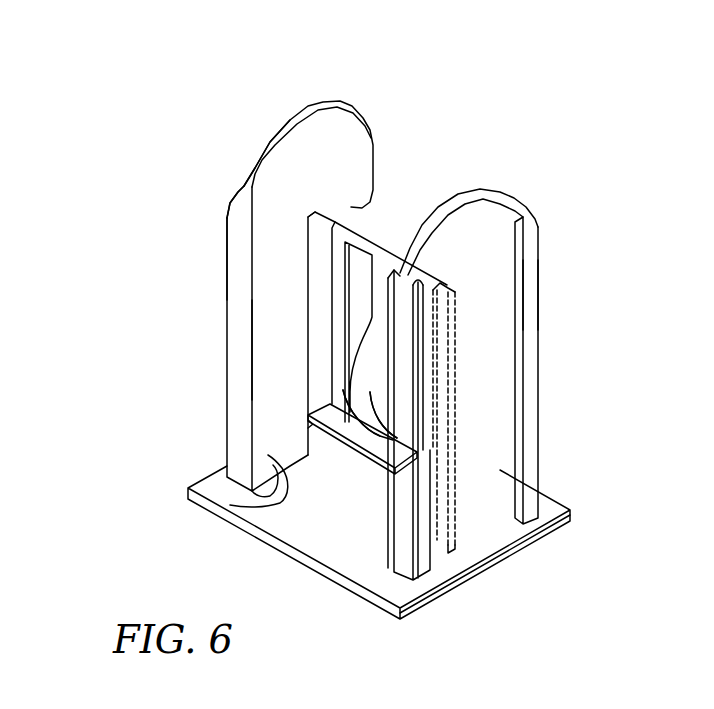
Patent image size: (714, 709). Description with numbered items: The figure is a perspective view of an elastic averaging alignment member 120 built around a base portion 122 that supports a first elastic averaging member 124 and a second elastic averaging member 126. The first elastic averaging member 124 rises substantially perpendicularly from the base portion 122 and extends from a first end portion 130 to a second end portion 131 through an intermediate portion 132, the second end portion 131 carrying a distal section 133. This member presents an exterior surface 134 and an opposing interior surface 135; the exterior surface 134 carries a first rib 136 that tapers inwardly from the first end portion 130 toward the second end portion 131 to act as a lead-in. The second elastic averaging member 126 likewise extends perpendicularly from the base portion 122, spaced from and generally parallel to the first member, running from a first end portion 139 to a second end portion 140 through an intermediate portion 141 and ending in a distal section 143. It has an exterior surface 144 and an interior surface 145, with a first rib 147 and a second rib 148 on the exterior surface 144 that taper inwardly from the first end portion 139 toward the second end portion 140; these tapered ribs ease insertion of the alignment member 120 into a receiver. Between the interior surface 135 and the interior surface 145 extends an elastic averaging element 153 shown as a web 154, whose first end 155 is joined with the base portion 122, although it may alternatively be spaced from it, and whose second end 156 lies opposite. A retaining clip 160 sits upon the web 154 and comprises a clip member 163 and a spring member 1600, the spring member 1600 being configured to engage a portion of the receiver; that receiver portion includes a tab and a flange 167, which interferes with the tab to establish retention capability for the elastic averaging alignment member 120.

The elastic averaging alignment member 120 is at (128, 172).
The base portion 122 is at (206, 477).
The first elastic averaging member 124 is at (197, 310).
The second elastic averaging member 126 is at (550, 431).
The first end portion 130 is at (230, 505).
The second end portion 131 is at (290, 108).
The intermediate portion 132 is at (385, 236).
The distal section 133 is at (258, 131).
The exterior surface 134 is at (247, 170).
The interior surface 135 is at (245, 510).
The first rib 136 is at (227, 218).
The first end portion 139 is at (477, 545).
The second end portion 140 is at (487, 187).
The intermediate portion 141 is at (495, 402).
The distal section 143 is at (500, 211).
The exterior surface 144 is at (490, 287).
The interior surface 145 is at (398, 272).
The first rib 147 is at (393, 553).
The second rib 148 is at (531, 293).
The elastic averaging element 153 is at (270, 342).
The web 154 is at (308, 383).
The first end 155 is at (378, 490).
The second end 156 is at (315, 218).
The retaining clip 160 is at (398, 205).
The clip member 163 is at (357, 440).
The flange 167 is at (308, 413).
The spring member 1600 is at (373, 400).